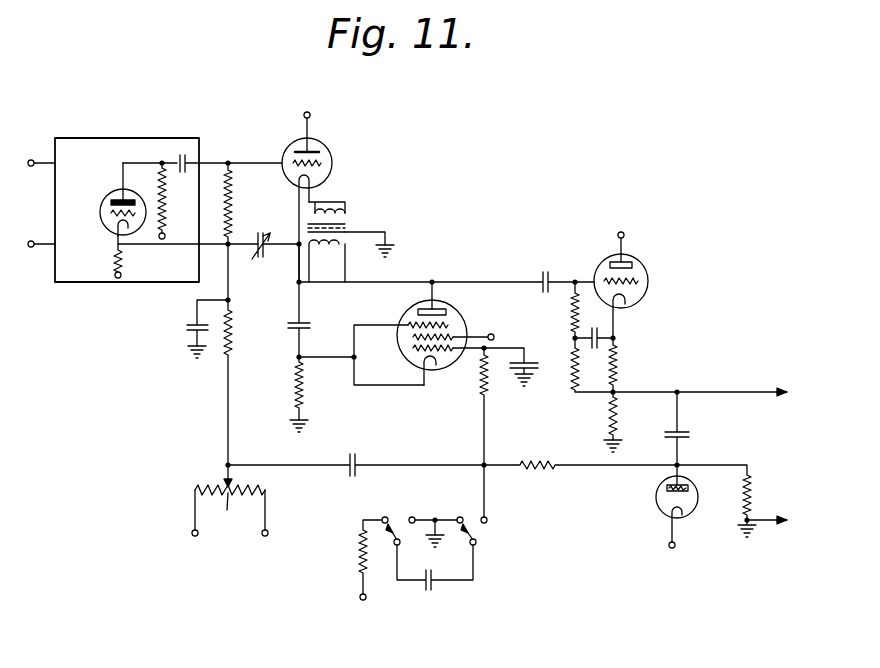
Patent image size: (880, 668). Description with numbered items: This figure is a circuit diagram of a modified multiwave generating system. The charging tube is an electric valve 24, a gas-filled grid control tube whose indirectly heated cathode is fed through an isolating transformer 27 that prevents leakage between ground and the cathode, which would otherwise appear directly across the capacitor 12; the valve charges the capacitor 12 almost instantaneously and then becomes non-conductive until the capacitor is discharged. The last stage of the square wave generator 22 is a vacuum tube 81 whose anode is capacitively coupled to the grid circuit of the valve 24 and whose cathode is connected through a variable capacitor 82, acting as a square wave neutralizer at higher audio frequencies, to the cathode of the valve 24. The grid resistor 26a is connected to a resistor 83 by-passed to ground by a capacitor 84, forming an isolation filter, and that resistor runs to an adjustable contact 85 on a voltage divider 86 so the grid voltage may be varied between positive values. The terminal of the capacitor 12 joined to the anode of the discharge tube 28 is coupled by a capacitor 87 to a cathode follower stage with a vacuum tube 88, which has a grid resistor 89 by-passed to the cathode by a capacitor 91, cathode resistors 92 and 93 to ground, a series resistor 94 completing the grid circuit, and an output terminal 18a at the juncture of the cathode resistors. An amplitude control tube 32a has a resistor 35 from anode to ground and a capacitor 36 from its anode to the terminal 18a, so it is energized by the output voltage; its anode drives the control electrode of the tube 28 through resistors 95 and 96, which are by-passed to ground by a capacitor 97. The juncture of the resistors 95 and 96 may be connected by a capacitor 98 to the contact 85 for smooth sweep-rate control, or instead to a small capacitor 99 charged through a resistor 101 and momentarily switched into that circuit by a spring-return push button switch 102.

The square wave generator 22 is at (78, 143).
The vacuum tube 81 is at (104, 196).
The grid resistor 26a is at (238, 200).
The variable capacitor 82 is at (259, 262).
The electric valve 24 is at (332, 157).
The isolating transformer 27 is at (347, 225).
The capacitor 87 is at (540, 272).
The vacuum tube 88 is at (641, 271).
The grid resistor 89 is at (572, 308).
The capacitor 91 is at (594, 326).
The cathode resistor 92 is at (622, 358).
The cathode resistor 93 is at (610, 417).
The series resistor 94 is at (570, 375).
The capacitor 97 is at (528, 360).
The output terminal 18a is at (768, 388).
The capacitor 36 is at (697, 433).
The resistor 35 is at (753, 492).
The amplitude control tube 32a is at (657, 498).
The resistor 95 is at (542, 474).
The discharge tube 28 is at (453, 320).
The resistor 96 is at (478, 388).
The capacitor 12 is at (318, 330).
The adjustable contact 85 is at (303, 387).
The capacitor 84 is at (186, 327).
The resistor 83 is at (233, 340).
The capacitor 98 is at (362, 460).
The voltage divider 86 is at (222, 510).
The resistor 101 is at (333, 557).
The double pole double throw switch 102 is at (427, 503).
The small capacitor 99 is at (427, 587).